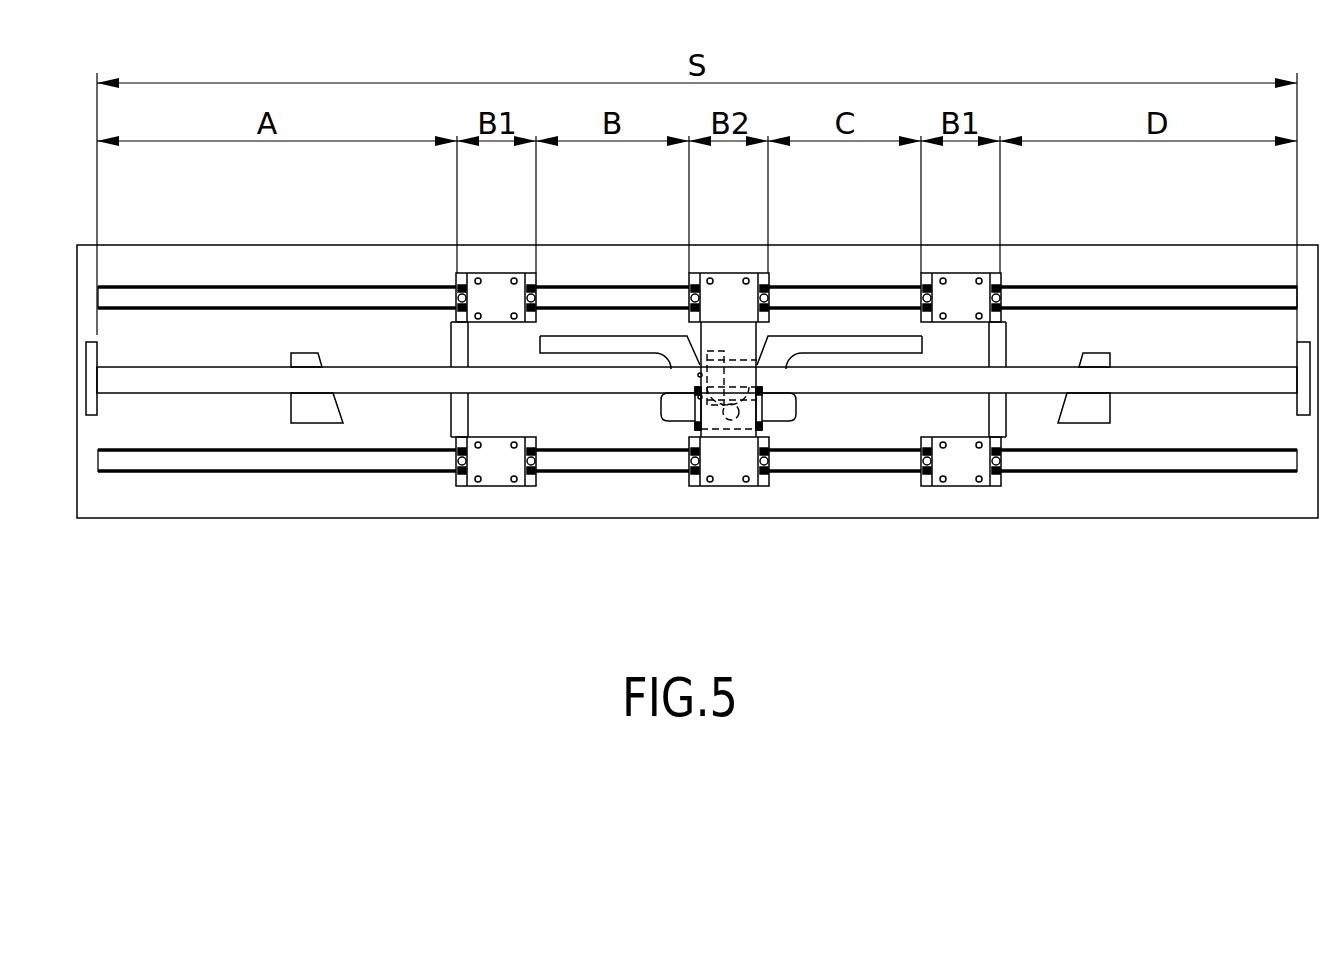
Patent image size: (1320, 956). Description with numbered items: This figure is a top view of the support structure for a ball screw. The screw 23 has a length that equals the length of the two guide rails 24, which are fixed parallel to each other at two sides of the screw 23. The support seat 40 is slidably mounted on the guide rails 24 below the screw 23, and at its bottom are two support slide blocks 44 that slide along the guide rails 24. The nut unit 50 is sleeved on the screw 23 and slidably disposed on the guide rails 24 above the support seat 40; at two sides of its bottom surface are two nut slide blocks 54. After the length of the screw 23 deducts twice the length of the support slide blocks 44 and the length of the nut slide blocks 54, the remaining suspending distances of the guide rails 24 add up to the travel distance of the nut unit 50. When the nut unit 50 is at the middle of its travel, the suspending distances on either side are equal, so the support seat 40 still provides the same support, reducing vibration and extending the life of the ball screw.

The screw 23 is at (238, 382).
The guide rails 24 is at (313, 300).
The support slide blocks 44 is at (538, 278).
The nut slide blocks 54 is at (770, 278).
The nut unit 50 is at (731, 487).
The support seat 40 is at (856, 434).